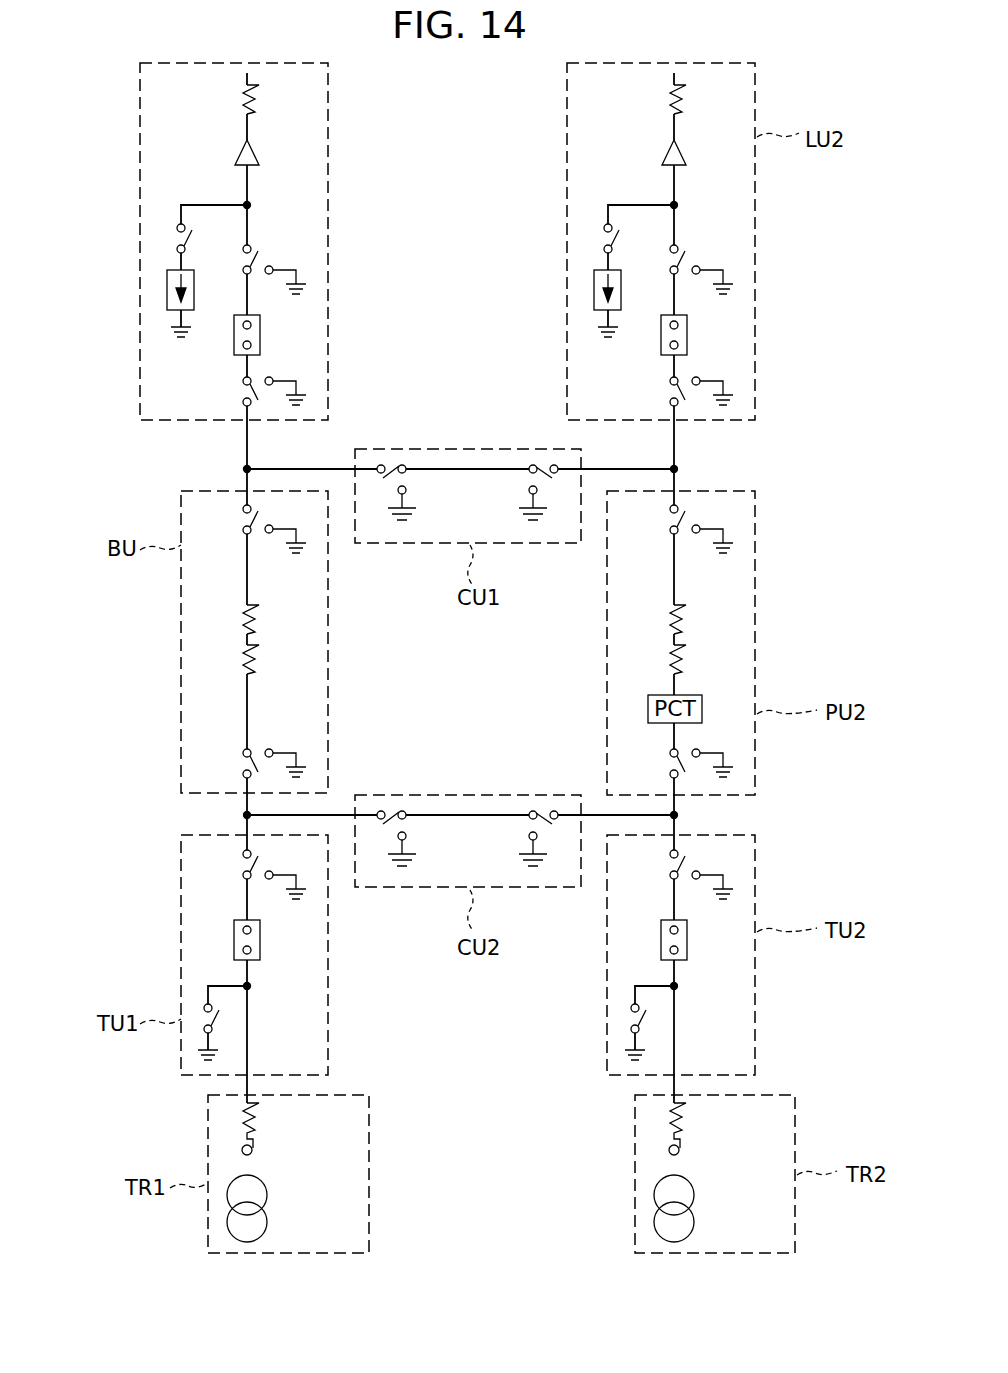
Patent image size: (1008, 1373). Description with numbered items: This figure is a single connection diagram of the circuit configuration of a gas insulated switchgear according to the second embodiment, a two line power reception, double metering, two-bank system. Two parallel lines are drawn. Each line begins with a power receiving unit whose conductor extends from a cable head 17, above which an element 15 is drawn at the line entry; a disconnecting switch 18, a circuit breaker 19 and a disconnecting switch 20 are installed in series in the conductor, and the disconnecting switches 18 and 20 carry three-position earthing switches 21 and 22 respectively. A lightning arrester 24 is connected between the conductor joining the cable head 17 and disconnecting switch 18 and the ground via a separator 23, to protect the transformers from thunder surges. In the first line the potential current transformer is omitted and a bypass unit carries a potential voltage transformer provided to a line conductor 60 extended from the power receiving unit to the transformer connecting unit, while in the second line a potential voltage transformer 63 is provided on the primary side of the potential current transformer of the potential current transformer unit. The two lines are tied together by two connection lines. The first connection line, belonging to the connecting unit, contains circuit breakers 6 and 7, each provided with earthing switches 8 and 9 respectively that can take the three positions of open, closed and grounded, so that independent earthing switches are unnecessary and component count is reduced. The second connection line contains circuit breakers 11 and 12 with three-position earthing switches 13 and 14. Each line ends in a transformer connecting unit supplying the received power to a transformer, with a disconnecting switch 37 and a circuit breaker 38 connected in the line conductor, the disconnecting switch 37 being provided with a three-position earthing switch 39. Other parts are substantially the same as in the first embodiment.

The circuit breaker 6 is at (390, 465).
The circuit breaker 7 is at (540, 463).
The earthing switch 8 is at (403, 532).
The earthing switch 9 is at (534, 532).
The circuit breaker 11 is at (390, 803).
The circuit breaker 12 is at (542, 803).
The earthing switch 13 is at (403, 878).
The earthing switch 14 is at (534, 878).
The lightning arrester 15 is at (258, 100).
The cable head 17 is at (259, 157).
The disconnecting switch 18 is at (265, 258).
The circuit breaker 19 is at (262, 335).
The disconnecting switch 20 is at (243, 395).
The earthing switch 21 is at (307, 287).
The earthing switch 22 is at (307, 396).
The separator 23 is at (167, 240).
The lightning arrester 24 is at (167, 288).
The disconnecting switch 37 is at (237, 869).
The circuit breaker 38 is at (235, 942).
The earthing switch 39 is at (296, 908).
The line conductor 60 is at (237, 622).
The potential voltage transformer 63 is at (697, 618).